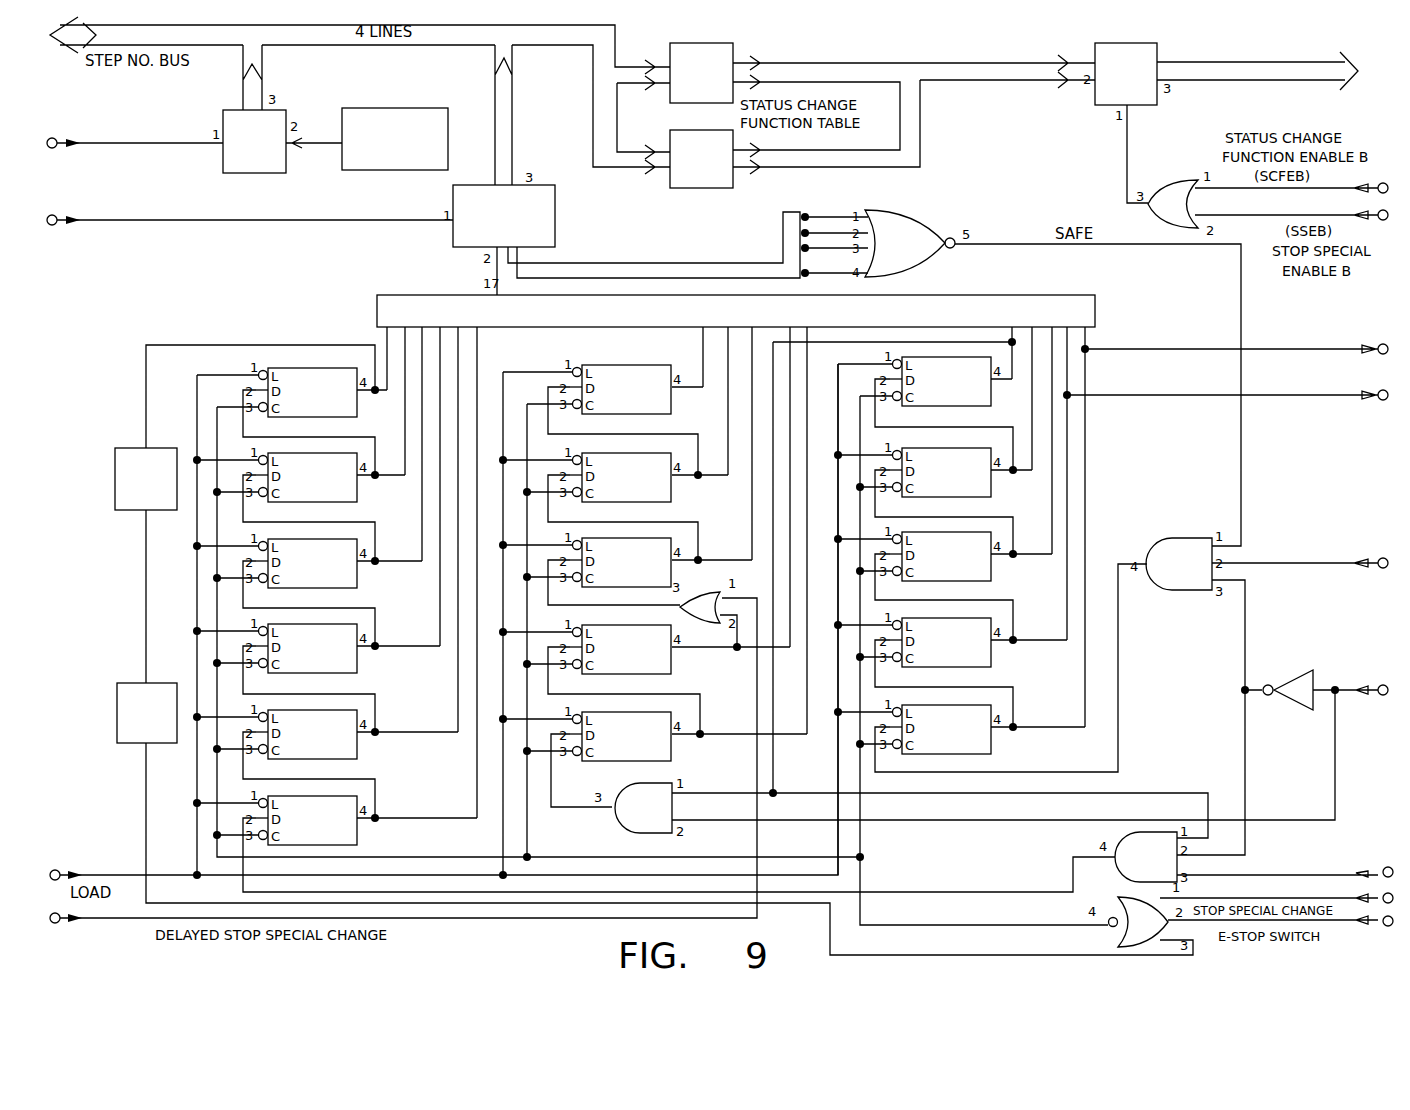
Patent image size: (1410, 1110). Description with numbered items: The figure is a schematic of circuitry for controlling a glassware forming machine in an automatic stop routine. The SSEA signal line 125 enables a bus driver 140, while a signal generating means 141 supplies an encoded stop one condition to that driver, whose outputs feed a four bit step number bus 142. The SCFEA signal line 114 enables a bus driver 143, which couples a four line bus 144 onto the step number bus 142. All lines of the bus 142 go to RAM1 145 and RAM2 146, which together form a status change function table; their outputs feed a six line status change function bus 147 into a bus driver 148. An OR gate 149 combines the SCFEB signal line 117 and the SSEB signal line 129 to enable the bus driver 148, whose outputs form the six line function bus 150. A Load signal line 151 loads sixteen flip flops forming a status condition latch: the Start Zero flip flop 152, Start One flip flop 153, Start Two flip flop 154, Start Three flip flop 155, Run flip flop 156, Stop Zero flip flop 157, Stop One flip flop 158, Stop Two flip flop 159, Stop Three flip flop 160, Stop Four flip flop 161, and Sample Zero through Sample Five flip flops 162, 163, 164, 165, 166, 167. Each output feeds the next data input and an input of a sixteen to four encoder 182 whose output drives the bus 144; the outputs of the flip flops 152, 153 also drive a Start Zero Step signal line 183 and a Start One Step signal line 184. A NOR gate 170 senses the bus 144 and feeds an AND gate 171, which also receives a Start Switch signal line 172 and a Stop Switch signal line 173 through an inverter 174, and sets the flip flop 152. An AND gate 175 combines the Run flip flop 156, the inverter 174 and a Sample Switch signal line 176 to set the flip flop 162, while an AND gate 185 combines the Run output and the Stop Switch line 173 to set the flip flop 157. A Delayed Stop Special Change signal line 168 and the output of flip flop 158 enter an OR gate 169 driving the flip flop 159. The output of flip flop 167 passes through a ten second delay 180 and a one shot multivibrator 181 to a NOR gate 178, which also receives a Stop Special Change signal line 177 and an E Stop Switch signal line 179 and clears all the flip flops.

The SCFEA signal line 114 is at (247, 220).
The SCFEB signal line 117 is at (1307, 190).
The SSEA signal line 125 is at (125, 143).
The SSEB signal line 129 is at (1306, 218).
The bus driver 140 is at (271, 160).
The signal generating means 141 is at (445, 132).
The step number bus 142 is at (480, 38).
The bus driver 143 is at (544, 199).
The bus 144 is at (544, 263).
The RAM1 145 is at (728, 60).
The RAM2 146 is at (711, 188).
The status change function bus 147 is at (985, 60).
The bus driver 148 is at (1150, 42).
The OR gate 149 is at (1165, 186).
The function bus 150 is at (1311, 62).
The Load signal line 151 is at (116, 875).
The Start Zero (ST 0) flip flop 152 is at (976, 744).
The Start One (ST 1) flip flop 153 is at (976, 657).
The Start Two (ST 2) flip flop 154 is at (976, 571).
The Start Three (ST 3) flip flop 155 is at (976, 487).
The Run flip flop 156 is at (976, 396).
The Stop Zero (STOP 0) flip flop 157 is at (656, 751).
The Stop One (STOP 1) flip flop 158 is at (656, 664).
The Stop Two (STOP 2) flip flop 159 is at (656, 577).
The Stop Three (STOP 3) flip flop 160 is at (656, 492).
The Stop Four (STOP 4) flip flop 161 is at (656, 404).
The Sample Zero (SAM 0) flip flop 162 is at (342, 835).
The Sample One (SAM 1) flip flop 163 is at (342, 749).
The Sample Two (SAM 2) flip flop 164 is at (342, 663).
The Sample Three (SAM 3) flip flop 165 is at (342, 578).
The Sample Four (SAM 4) flip flop 166 is at (342, 492).
The Sample Five (SAM 5) flip flop 167 is at (342, 407).
The Delayed Stop Special Change signal line 168 is at (128, 920).
The OR gate 169 is at (700, 607).
The NOR gate 170 is at (918, 226).
The AND gate 171 is at (1172, 548).
The Start Switch signal line 172 is at (1338, 561).
The Stop Switch signal line 173 is at (1370, 687).
The inverter 174 is at (1295, 680).
The AND gate 175 is at (1130, 866).
The Sample Switch signal line 176 is at (1367, 870).
The Stop Special Change signal line 177 is at (1390, 893).
The NOR gate 178 is at (1108, 932).
The E Stop Switch signal line 179 is at (1385, 926).
The ten second delay 180 is at (110, 468).
The one shot multivibrator 181 is at (120, 683).
The encoder 182 is at (947, 295).
The Start Zero Step signal line 183 is at (1300, 348).
The Start One Step signal line 184 is at (1295, 395).
The AND gate 185 is at (622, 816).